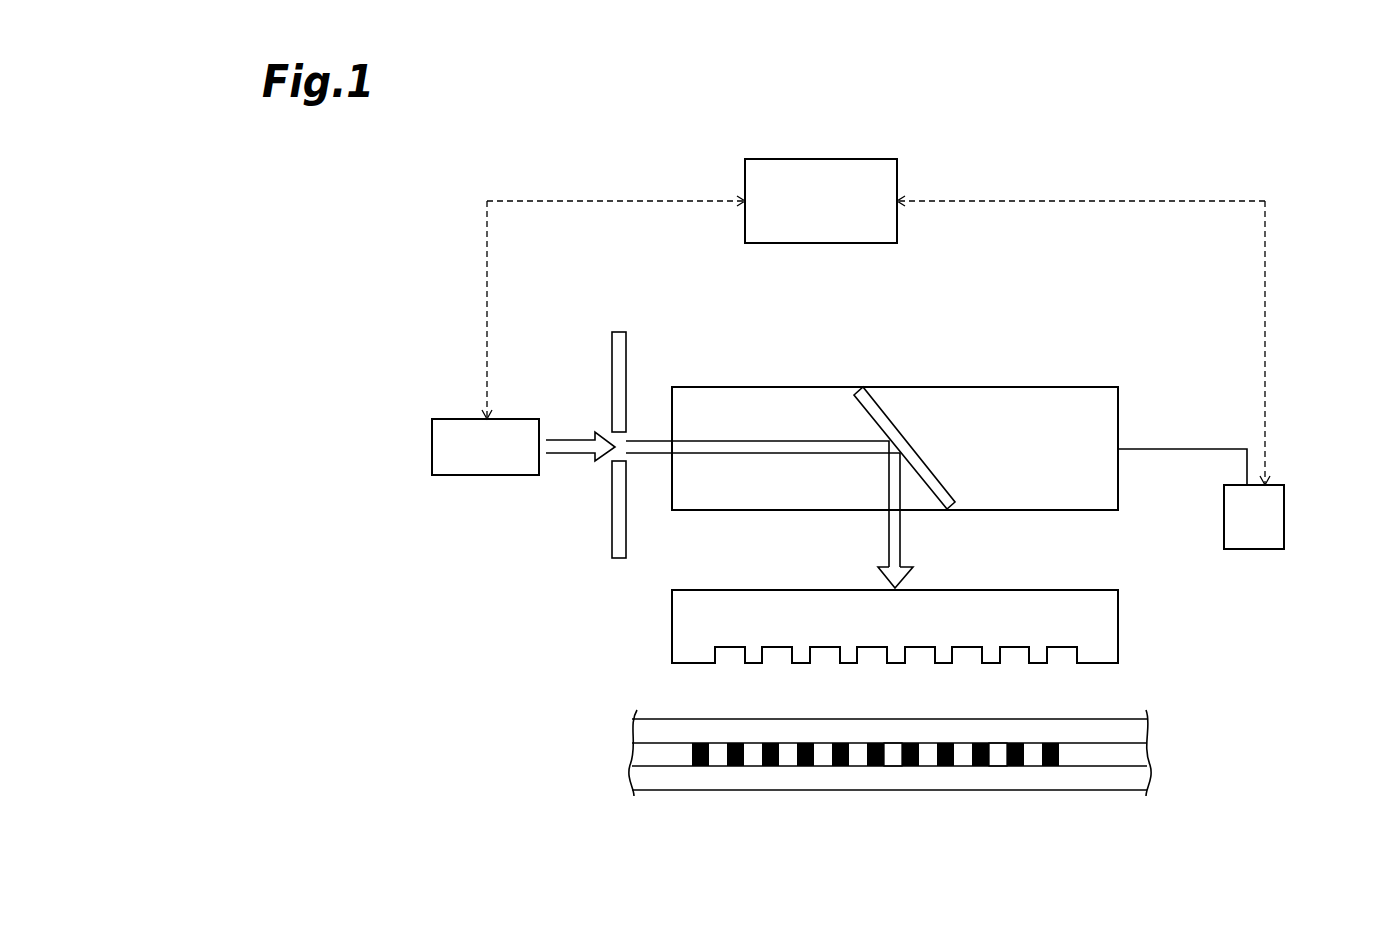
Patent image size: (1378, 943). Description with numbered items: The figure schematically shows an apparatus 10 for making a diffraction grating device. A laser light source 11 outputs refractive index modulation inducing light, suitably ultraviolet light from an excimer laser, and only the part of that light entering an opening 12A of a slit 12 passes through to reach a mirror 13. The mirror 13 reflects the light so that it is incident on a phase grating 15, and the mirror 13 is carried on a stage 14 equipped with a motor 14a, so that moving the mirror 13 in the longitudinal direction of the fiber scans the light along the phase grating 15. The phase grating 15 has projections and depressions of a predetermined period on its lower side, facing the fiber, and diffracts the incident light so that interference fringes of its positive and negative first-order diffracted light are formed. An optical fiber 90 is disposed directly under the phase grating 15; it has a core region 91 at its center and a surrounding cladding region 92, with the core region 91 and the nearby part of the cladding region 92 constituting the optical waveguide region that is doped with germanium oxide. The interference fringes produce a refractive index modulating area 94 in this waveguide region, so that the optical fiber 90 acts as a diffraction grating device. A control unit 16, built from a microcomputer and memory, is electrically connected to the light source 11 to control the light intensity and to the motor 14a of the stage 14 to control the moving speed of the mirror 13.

The apparatus for making a diffraction grating device 10 is at (1286, 168).
The laser light source 11 is at (468, 427).
The slit 12 is at (617, 332).
The opening 12A is at (612, 440).
The mirror 13 is at (890, 417).
The stage 14 is at (978, 383).
The motor 14a is at (1273, 519).
The phase grating 15 is at (1107, 633).
The control unit 16 is at (888, 225).
The optical fiber 90 is at (872, 856).
The core region 91 is at (943, 768).
The cladding region 92 is at (893, 775).
The refractive index modulating area 94 is at (692, 712).